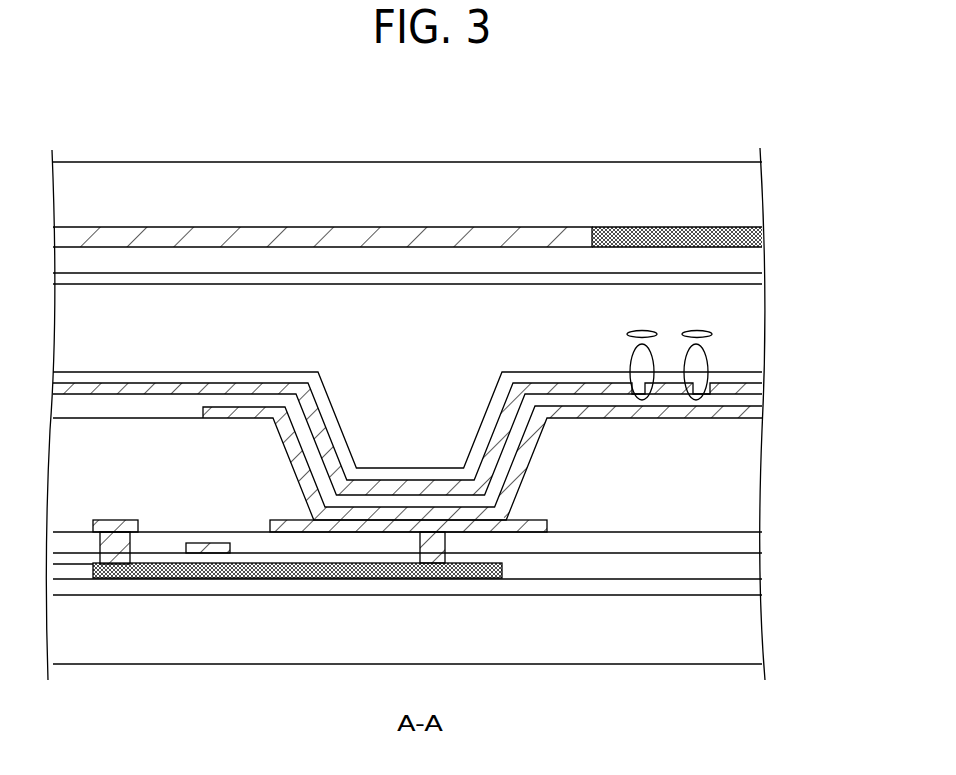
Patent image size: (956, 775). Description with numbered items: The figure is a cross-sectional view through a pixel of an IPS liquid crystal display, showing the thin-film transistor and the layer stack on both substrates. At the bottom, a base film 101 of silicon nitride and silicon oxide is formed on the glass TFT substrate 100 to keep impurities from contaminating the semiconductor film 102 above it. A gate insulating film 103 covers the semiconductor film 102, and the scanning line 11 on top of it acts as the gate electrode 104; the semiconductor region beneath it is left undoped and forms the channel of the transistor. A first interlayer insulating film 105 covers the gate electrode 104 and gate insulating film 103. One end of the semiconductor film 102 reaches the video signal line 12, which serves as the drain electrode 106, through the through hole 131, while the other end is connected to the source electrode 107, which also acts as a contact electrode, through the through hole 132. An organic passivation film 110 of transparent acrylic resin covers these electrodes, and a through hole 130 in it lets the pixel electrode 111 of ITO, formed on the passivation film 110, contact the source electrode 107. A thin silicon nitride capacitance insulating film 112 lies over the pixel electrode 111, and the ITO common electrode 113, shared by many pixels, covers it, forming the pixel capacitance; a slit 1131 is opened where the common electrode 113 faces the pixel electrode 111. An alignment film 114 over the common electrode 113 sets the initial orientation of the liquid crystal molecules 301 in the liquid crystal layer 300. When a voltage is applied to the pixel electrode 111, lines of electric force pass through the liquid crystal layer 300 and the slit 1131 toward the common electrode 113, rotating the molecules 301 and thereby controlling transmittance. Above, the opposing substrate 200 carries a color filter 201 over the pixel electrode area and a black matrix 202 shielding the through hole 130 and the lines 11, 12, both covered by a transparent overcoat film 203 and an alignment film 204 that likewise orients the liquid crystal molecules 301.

The opposing substrate 200 is at (750, 192).
The color filter 201 is at (655, 237).
The black matrix 202 is at (513, 238).
The overcoat film 203 is at (750, 258).
The alignment film 204 is at (427, 284).
The liquid crystal layer 300 is at (750, 323).
The liquid crystal molecules 301 is at (641, 330).
The alignment film 114 is at (517, 371).
The common electrode 113 is at (578, 384).
The slit 1131 is at (688, 418).
The capacitance insulating film 112 is at (750, 398).
The pixel electrode 111 is at (750, 415).
The organic passivation film 110 is at (750, 465).
The through hole 130 is at (537, 453).
The source electrode 107 is at (531, 520).
The first interlayer insulating film 105 is at (750, 543).
The gate insulating film 103 is at (750, 566).
The semiconductor film 102 is at (262, 580).
The base film 101 is at (750, 586).
The TFT substrate 100 is at (750, 633).
The through hole 132 is at (447, 537).
The through hole 131 is at (130, 543).
The gate electrode 104 is at (186, 628).
The scanning line 11 is at (198, 551).
The drain electrode 106 is at (124, 495).
The video signal line 12 is at (115, 527).